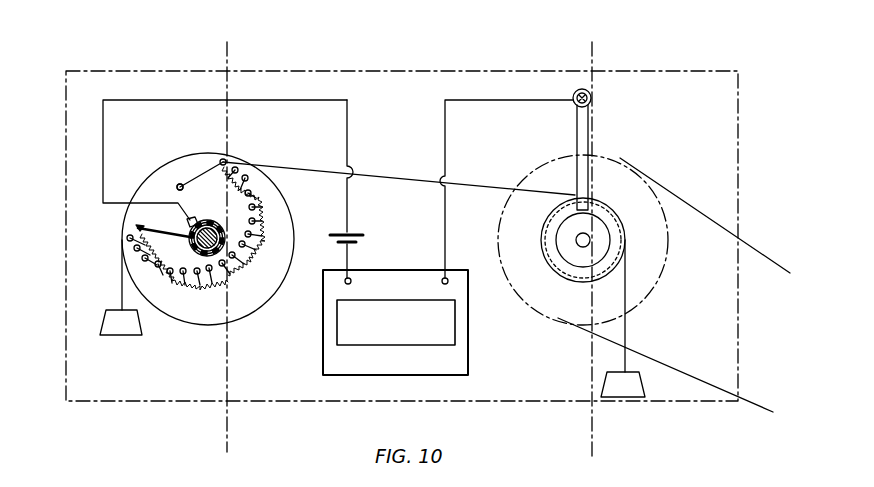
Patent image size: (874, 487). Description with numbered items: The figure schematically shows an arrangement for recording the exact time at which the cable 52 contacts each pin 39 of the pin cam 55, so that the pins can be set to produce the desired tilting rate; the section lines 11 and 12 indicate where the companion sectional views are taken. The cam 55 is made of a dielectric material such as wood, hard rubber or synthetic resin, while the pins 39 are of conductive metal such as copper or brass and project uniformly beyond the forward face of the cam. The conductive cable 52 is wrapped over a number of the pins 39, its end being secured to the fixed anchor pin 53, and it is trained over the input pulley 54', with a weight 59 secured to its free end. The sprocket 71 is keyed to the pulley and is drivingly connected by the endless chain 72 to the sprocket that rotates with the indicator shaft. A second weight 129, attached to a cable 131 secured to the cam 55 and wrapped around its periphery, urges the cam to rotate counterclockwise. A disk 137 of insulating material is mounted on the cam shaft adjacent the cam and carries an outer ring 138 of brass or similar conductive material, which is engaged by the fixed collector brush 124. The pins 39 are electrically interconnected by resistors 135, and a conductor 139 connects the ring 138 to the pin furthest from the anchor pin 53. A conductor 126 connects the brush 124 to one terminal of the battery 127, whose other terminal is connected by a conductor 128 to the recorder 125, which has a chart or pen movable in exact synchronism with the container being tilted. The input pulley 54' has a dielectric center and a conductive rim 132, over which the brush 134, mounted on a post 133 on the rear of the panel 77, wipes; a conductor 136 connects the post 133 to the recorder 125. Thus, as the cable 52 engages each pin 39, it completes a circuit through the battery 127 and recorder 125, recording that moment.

The section line 11- 11 is at (227, 48).
The section line 12- 12 is at (592, 48).
The pin 39 is at (246, 180).
The chain or cable 52 is at (392, 177).
The anchor pin 53 is at (178, 185).
The input pulley 54' is at (579, 273).
The pin cam 55 is at (248, 302).
The weight 59 is at (623, 390).
The gear or sprocket 71 is at (620, 158).
The endless chain 72 is at (693, 207).
The panel 77 is at (312, 402).
The collector brush 124 is at (195, 218).
The recorder 125 is at (332, 362).
The conductor 126 is at (348, 128).
The battery 127 is at (365, 233).
The conductor 128 is at (350, 259).
The weight 129 is at (120, 330).
The cable 131 is at (121, 283).
The rim 132 is at (612, 242).
The post 133 is at (592, 96).
The brush 134 is at (582, 138).
The resistor 135 is at (261, 242).
The conductor 136 is at (507, 100).
The disk 137 is at (222, 247).
The ring 138 is at (197, 254).
The conductor 139 is at (138, 227).